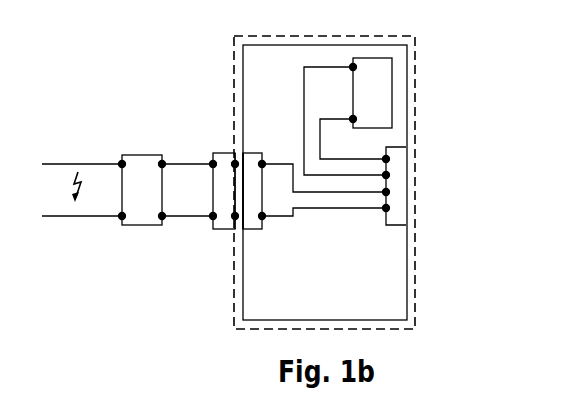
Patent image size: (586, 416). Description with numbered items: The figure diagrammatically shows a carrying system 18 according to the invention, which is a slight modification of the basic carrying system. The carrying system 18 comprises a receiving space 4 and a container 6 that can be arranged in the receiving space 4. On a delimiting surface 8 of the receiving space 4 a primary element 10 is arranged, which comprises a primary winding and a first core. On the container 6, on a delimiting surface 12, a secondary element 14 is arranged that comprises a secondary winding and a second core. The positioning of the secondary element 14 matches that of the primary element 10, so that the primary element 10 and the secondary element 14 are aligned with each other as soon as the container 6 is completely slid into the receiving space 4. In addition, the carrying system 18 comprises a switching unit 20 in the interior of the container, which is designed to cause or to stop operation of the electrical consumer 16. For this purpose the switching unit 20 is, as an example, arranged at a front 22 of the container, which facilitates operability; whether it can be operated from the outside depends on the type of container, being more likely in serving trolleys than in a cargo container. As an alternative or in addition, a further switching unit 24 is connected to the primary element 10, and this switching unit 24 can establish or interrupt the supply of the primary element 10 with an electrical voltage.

The receiving space 4 is at (233, 316).
The container 6 is at (390, 302).
The delimiting surface 8 is at (237, 157).
The primary element 10 is at (223, 229).
The delimiting surface 12 is at (247, 150).
The secondary element 14 is at (245, 232).
The electrical consumer 16 is at (375, 90).
The carrying system 18 is at (170, 62).
The switching unit 20 is at (397, 178).
The front 22 is at (411, 256).
The further switching unit 24 is at (147, 226).